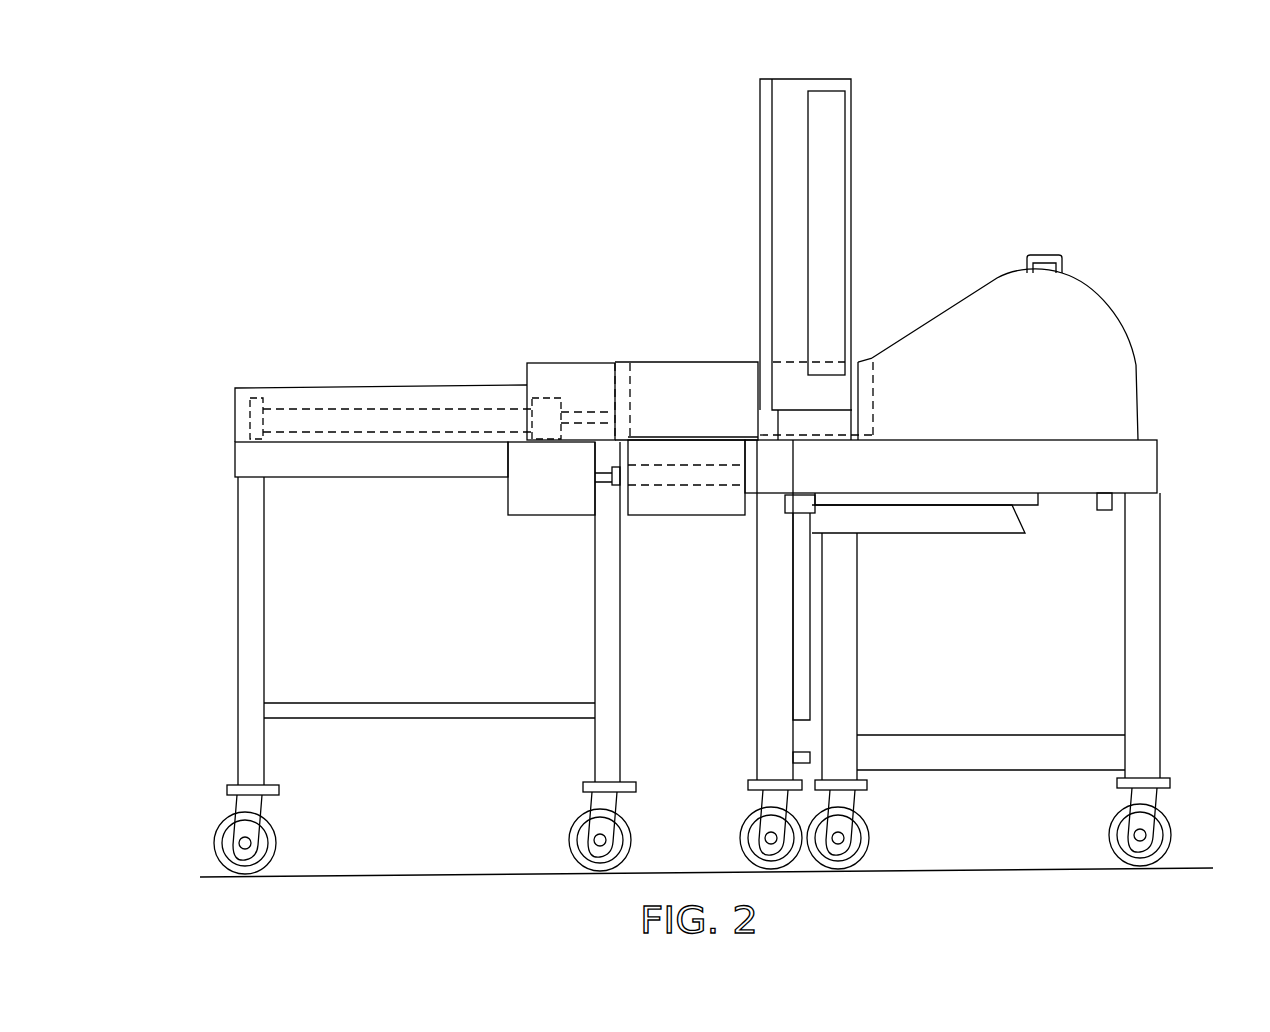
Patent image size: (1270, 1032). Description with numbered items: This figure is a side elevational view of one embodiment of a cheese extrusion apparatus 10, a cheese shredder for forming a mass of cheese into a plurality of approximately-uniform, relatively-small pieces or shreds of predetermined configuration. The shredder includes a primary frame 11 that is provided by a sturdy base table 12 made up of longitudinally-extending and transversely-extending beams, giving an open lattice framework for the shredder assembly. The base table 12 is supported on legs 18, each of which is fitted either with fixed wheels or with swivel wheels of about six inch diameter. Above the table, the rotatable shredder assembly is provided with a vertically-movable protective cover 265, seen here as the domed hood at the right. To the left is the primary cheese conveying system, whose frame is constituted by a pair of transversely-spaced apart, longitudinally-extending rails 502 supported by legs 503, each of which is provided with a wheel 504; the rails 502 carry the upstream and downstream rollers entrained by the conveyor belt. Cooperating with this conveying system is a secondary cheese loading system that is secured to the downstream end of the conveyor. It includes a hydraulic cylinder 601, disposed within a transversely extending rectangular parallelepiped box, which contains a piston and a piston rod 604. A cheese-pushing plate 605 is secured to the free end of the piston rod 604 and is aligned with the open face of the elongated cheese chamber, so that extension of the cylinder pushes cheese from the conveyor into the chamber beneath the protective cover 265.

The cheese extrusion apparatus 10 is at (950, 236).
The primary frame 11 is at (1157, 450).
The base table 12 is at (1147, 470).
The legs 18 is at (852, 567).
The protective cover 265 is at (1085, 305).
The rails 502 is at (318, 480).
The legs 503 is at (245, 635).
The wheel 504 is at (222, 842).
The hydraulic cylinder 601 is at (400, 415).
The piston rod 604 is at (588, 413).
The cheese-pushing plate 605 is at (627, 368).